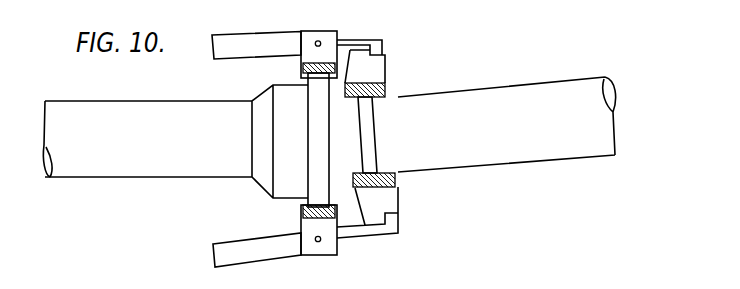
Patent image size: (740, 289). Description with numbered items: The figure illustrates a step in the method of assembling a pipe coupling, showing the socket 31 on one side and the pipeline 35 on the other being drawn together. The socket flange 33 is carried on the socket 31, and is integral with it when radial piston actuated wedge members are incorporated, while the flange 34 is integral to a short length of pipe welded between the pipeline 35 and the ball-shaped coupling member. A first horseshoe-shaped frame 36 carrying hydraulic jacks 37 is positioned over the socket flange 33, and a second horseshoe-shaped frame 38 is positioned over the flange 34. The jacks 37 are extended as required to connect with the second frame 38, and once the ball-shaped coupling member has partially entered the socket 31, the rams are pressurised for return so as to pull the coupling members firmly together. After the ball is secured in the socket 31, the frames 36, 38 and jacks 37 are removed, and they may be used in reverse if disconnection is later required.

The socket 31 is at (289, 91).
The socket flange 33 is at (315, 190).
The flange 34 is at (370, 160).
The pipeline 35 is at (503, 95).
The first horseshoe-shaped frame 36 is at (300, 212).
The hydraulic jacks 37 is at (268, 248).
The second horseshoe-shaped frame 38 is at (390, 87).